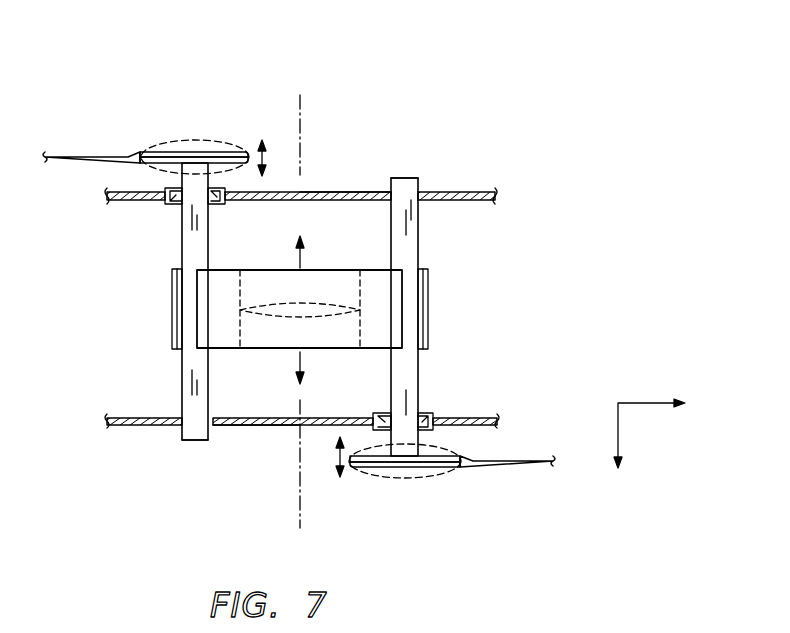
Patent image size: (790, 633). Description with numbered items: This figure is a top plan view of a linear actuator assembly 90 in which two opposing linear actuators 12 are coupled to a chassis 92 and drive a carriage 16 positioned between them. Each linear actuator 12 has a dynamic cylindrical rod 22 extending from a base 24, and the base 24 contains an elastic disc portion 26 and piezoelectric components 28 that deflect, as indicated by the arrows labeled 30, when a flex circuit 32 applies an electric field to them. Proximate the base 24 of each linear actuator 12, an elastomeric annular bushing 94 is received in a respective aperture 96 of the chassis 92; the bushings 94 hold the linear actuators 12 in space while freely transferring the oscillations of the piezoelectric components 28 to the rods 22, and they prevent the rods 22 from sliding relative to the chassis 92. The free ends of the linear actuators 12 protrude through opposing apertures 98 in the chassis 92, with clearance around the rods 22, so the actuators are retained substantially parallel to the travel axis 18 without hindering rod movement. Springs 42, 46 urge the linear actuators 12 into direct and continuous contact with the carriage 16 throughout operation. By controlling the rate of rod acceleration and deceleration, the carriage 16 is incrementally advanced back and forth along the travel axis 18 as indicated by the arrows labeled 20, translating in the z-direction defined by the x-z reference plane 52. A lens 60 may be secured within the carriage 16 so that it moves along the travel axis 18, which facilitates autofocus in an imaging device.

The linear actuator assembly 90 is at (490, 60).
The aperture 98 is at (425, 173).
The base 24 is at (176, 115).
The elastic disc portion 26 is at (243, 155).
The piezoelectric components 28 is at (222, 157).
The arrows indicating deflection 30 is at (266, 158).
The flex circuit 32 is at (87, 157).
The linear actuator 12 is at (137, 176).
The elastomeric annular bushing 94 is at (165, 198).
The aperture 96 is at (172, 213).
The chassis 92 is at (351, 190).
The dynamic cylindrical rod 22 is at (402, 251).
The spring 42 is at (172, 307).
The spring 46 is at (428, 307).
The carriage 16 is at (217, 349).
The lens 60 is at (283, 318).
The arrows indicating carriage movement 20 is at (302, 262).
The travel axis 18 is at (300, 486).
The x-z reference plane 52 is at (616, 437).